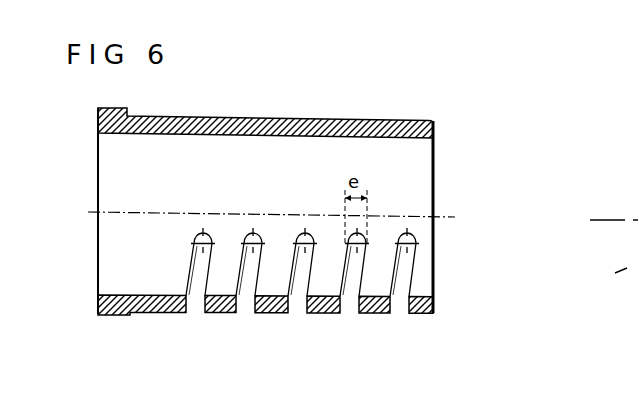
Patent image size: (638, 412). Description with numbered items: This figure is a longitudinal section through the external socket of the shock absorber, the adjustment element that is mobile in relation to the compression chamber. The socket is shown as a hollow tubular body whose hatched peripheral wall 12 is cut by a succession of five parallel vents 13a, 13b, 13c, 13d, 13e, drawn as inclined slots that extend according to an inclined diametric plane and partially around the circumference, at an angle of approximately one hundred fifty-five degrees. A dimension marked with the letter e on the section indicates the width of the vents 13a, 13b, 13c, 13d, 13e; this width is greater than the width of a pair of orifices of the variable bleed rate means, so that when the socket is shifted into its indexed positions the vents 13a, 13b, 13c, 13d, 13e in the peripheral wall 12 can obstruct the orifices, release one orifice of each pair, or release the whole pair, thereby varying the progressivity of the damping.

The peripheral wall 12 is at (234, 128).
The vent 13a is at (196, 311).
The vent 13b is at (244, 309).
The vent 13c is at (295, 310).
The vent 13d is at (347, 310).
The vent 13e is at (397, 310).